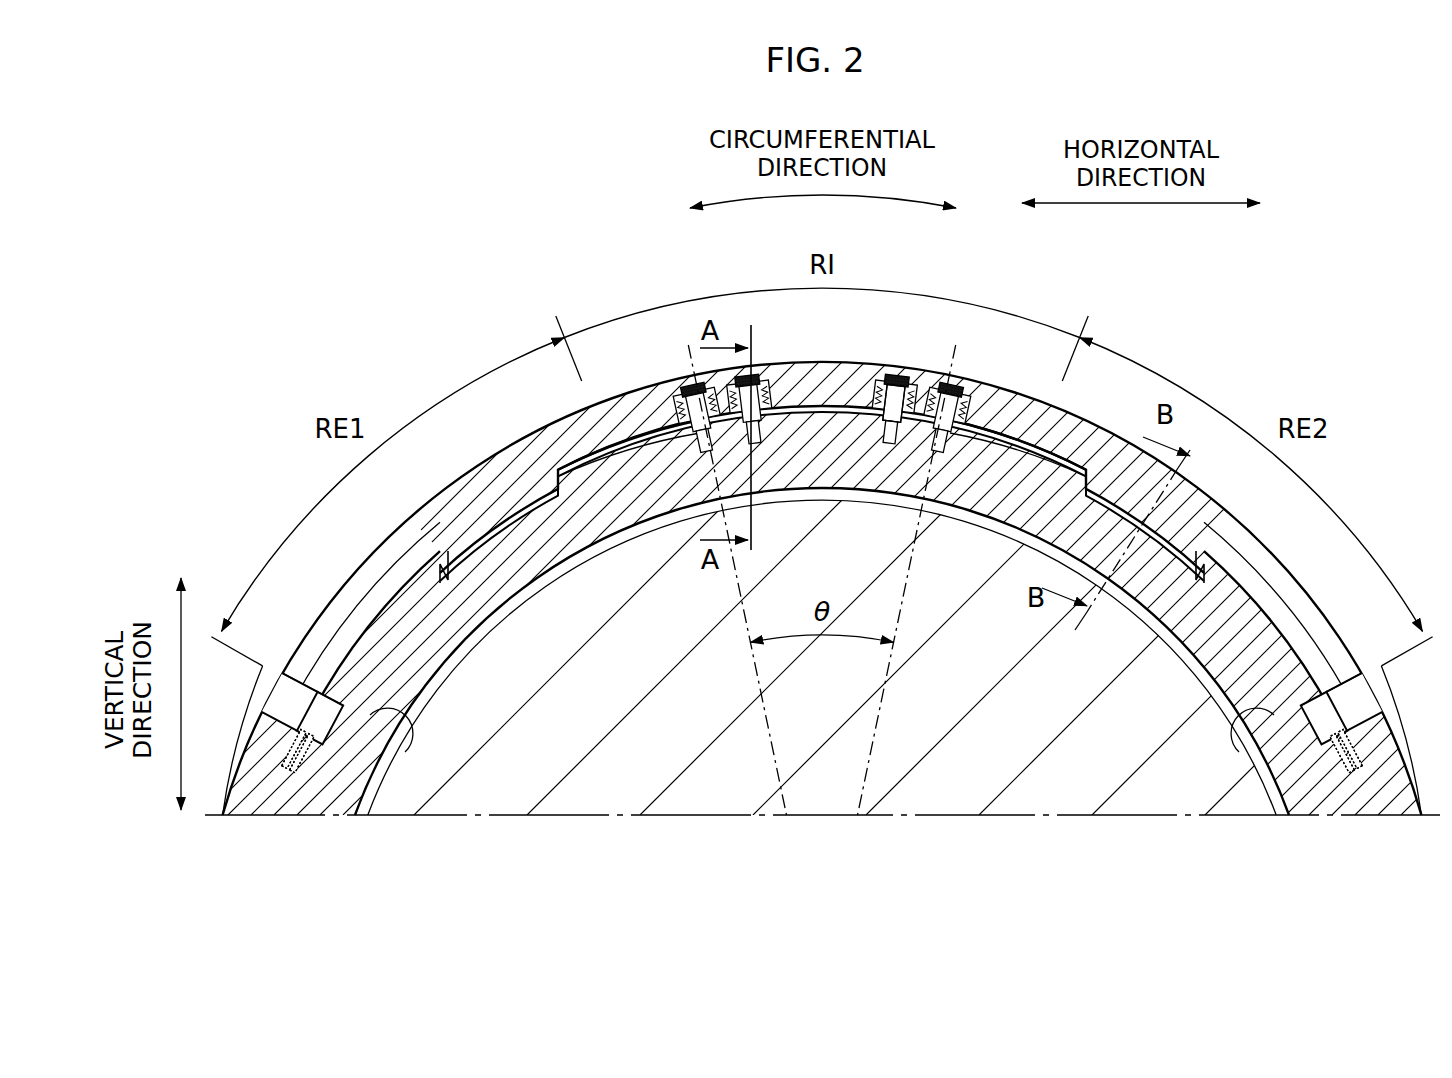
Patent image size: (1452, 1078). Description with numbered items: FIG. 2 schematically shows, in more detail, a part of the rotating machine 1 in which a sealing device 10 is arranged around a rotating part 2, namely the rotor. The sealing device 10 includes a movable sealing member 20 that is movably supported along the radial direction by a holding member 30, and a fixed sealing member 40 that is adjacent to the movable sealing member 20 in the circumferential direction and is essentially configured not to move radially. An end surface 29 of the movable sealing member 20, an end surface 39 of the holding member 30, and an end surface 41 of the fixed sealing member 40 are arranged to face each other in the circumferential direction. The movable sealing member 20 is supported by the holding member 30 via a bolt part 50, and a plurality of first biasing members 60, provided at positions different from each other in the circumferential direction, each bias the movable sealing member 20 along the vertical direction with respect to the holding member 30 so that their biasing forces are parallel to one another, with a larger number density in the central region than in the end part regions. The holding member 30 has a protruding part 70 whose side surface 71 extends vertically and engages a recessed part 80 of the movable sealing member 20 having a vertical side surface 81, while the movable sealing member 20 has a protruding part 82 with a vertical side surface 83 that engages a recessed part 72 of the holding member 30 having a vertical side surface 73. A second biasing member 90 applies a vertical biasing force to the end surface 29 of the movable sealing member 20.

The rotating machine 1 is at (1336, 244).
The rotating part 2 is at (662, 736).
The sealing device 10 is at (1266, 352).
The movable sealing member 20 is at (1232, 632).
The end surface 29 is at (383, 745).
The holding member 30 is at (1062, 432).
The end surface 39 is at (293, 700).
The fixed sealing member 40 is at (288, 797).
The end surface 41 is at (375, 705).
The bolt part 50 is at (897, 398).
The first biasing member 60 is at (733, 395).
The protruding part 70 is at (748, 531).
The side surface 71 is at (410, 546).
The recessed part 72 is at (590, 470).
The side surface 73 is at (556, 482).
The recessed part 80 is at (855, 529).
The side surface 81 is at (440, 552).
The protruding part 82 is at (585, 425).
The side surface 83 is at (520, 495).
The second biasing member 90 is at (300, 757).